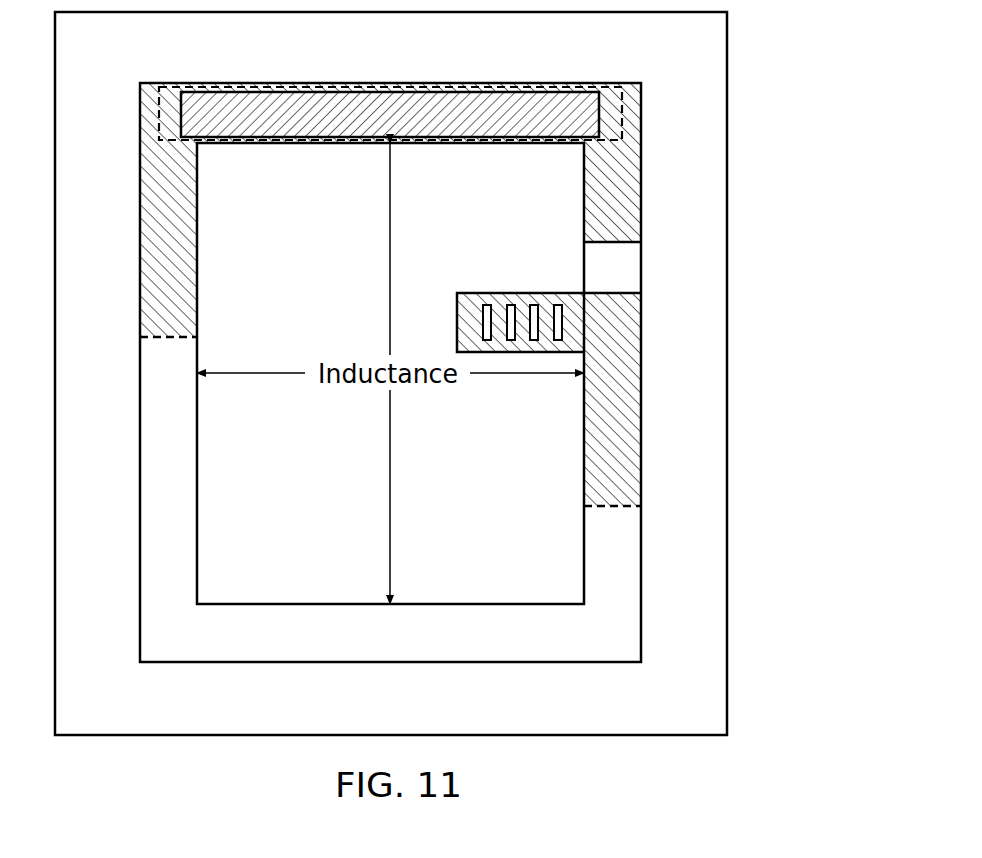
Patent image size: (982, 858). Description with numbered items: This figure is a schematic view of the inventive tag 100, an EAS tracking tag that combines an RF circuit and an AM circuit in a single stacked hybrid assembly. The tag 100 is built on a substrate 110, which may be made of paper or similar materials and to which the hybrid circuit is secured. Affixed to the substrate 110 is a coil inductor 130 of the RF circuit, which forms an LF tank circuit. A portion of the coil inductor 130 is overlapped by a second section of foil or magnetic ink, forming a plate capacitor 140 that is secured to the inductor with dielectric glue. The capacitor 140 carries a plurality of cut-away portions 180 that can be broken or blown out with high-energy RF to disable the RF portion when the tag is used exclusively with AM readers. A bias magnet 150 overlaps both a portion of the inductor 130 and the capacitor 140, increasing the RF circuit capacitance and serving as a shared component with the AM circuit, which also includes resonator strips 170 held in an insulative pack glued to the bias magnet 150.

The tag 100 is at (736, 800).
The substrate 110 is at (522, 728).
The coil inductor 130 is at (627, 606).
The plate capacitor 140 is at (162, 280).
The bias magnet 150 is at (563, 98).
The resonator strips 170 is at (167, 127).
The cut-away portions 180 is at (560, 305).